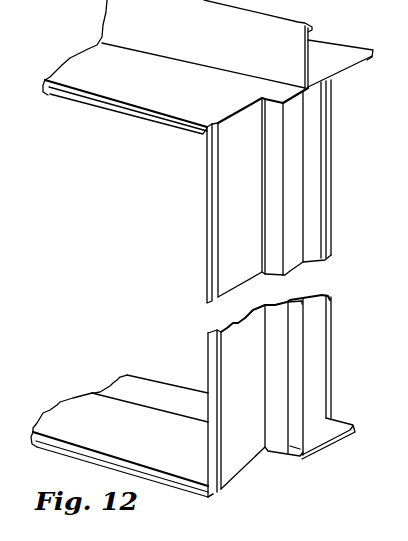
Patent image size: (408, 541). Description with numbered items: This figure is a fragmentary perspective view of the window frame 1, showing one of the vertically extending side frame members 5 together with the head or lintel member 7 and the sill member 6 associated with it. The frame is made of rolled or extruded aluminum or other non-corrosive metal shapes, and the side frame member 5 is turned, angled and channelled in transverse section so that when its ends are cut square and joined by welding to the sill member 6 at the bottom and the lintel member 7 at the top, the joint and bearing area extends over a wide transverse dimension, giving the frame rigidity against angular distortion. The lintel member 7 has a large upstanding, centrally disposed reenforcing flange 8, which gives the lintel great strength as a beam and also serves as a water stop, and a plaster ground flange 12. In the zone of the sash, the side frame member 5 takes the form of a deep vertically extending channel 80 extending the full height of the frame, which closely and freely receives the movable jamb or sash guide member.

The rectangular frame 1 is at (208, 231).
The side frame member 5 is at (318, 318).
The sill member 6 is at (178, 460).
The lintel member 7 is at (340, 63).
The reenforcing flange 8 is at (298, 22).
The plaster ground flange 12 is at (213, 485).
The channel 80 is at (283, 442).